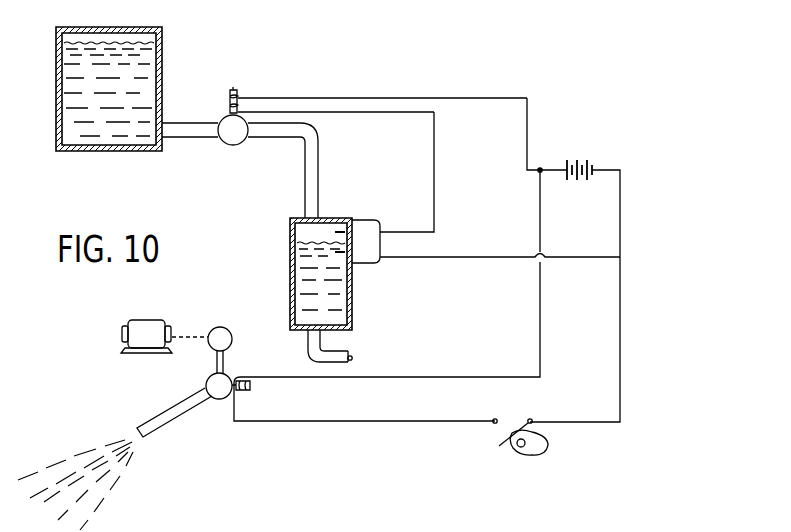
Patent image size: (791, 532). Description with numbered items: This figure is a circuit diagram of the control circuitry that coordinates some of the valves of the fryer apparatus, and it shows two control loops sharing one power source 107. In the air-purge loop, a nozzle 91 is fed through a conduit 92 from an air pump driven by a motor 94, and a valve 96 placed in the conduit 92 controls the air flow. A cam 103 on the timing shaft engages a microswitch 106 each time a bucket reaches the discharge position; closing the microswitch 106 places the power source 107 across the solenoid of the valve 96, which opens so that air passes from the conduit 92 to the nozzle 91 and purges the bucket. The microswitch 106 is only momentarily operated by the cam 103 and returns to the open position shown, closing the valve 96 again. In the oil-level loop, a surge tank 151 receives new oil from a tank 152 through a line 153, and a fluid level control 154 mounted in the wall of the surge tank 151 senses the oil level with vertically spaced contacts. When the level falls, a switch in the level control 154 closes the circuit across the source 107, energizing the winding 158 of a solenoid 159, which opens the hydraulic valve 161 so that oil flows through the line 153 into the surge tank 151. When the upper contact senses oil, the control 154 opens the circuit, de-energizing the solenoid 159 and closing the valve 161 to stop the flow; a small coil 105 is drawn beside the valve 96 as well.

The tank 152 is at (162, 74).
The hydraulic valve 161 is at (236, 146).
The winding 158 is at (230, 100).
The solenoid 159 is at (236, 90).
The line 153 is at (318, 184).
The surge tank 151 is at (290, 267).
The fluid level control 154 is at (366, 232).
The power source 107 is at (586, 162).
The microswitch 106 is at (522, 425).
The cam 103 is at (528, 455).
The motor 94 is at (158, 320).
The conduit 92 is at (217, 366).
The valve 96 is at (221, 400).
The solenoid 105 is at (240, 381).
The nozzle 91 is at (166, 410).